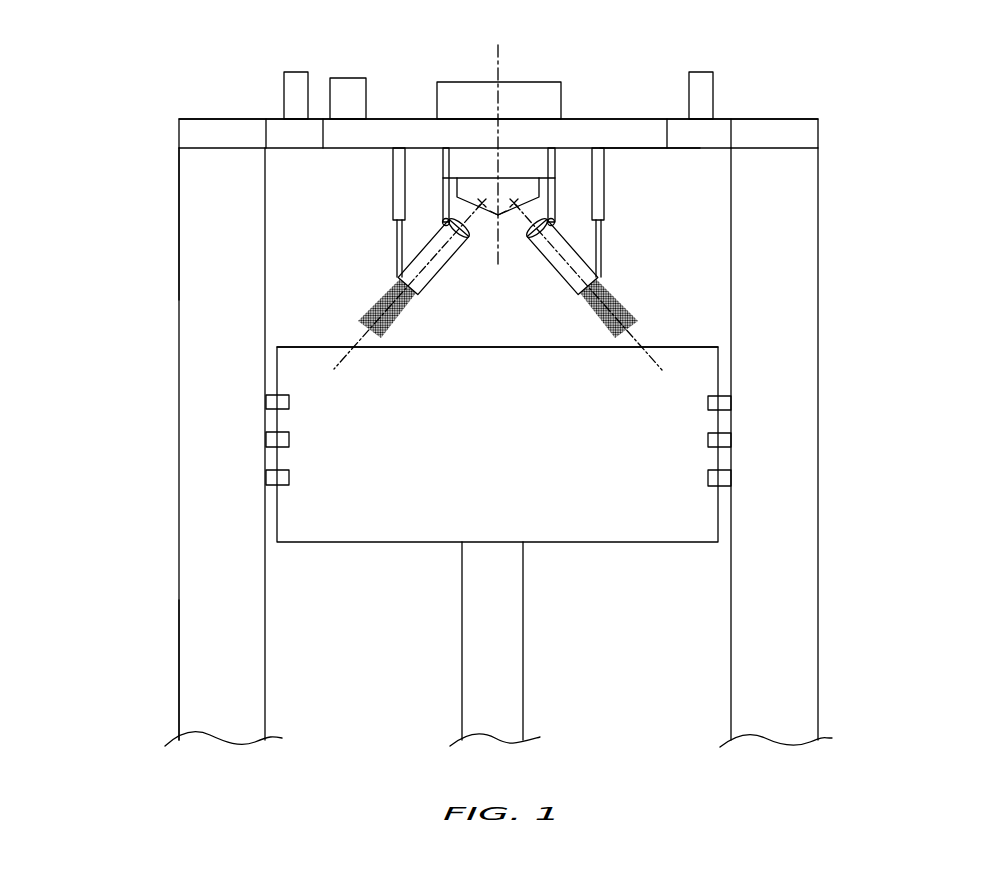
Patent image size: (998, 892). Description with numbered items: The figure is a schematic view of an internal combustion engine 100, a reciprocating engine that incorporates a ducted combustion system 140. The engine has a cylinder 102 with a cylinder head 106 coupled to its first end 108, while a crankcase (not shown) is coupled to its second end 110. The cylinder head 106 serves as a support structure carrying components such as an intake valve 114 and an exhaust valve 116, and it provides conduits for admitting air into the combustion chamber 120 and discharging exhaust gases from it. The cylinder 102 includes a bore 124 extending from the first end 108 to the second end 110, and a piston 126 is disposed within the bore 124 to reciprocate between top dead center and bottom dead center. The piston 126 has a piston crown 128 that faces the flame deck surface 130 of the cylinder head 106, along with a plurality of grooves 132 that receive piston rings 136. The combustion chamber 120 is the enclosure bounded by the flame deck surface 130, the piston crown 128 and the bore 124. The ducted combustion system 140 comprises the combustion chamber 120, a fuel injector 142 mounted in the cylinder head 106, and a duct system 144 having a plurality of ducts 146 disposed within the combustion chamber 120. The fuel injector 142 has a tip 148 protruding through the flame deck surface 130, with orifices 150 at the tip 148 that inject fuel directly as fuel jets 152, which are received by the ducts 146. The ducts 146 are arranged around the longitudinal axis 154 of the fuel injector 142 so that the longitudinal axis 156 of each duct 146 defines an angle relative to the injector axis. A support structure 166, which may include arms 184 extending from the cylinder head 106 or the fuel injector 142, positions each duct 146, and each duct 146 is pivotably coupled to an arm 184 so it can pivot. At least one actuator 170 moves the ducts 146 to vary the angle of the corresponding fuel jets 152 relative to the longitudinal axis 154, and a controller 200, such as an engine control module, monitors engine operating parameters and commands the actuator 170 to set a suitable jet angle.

The internal combustion engine 100 is at (898, 118).
The cylinder 102 is at (179, 245).
The cylinder head 106 is at (179, 133).
The first end 108 is at (179, 156).
The second end 110 is at (179, 714).
The intake valve 114 is at (284, 97).
The exhaust valve 116 is at (714, 98).
The combustion chamber 120 is at (697, 266).
The bore 124 is at (730, 210).
The piston 126 is at (720, 517).
The piston crown 128 is at (680, 345).
The flame deck surface 130 is at (642, 148).
The grooves 132 is at (722, 405).
The piston rings 136 is at (718, 406).
The ducted combustion system 140 is at (657, 230).
The fuel injector 142 is at (561, 96).
The duct system 144 is at (397, 274).
The ducts 146 is at (430, 286).
The tip 148 is at (490, 216).
The orifices 150 is at (482, 203).
The fuel jets 152 is at (458, 214).
The longitudinal axis 154 is at (498, 60).
The longitudinal axis 156 is at (334, 369).
The support structure 166 is at (442, 167).
The actuator 170 is at (605, 177).
The arms 184 is at (556, 190).
The controller 200 is at (343, 78).